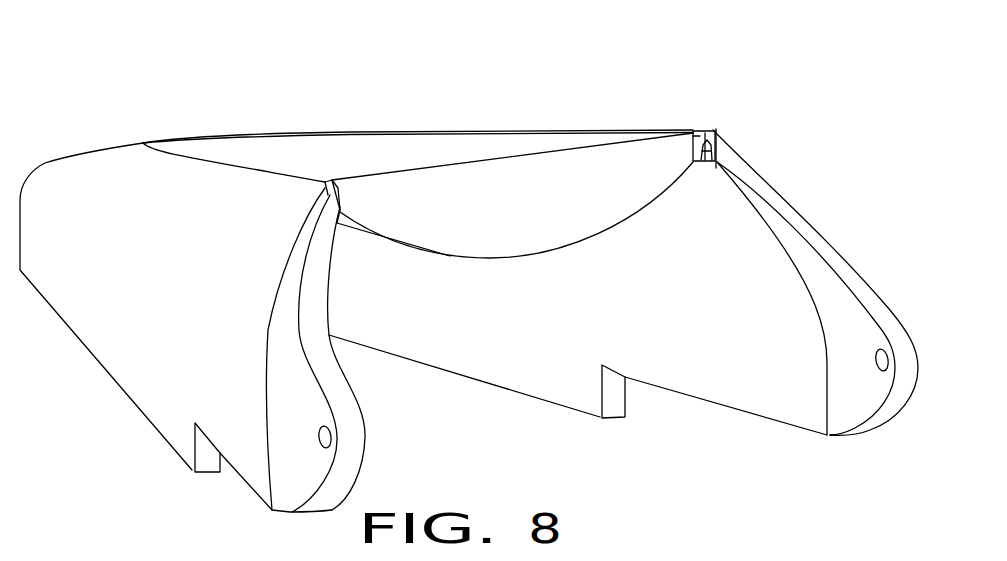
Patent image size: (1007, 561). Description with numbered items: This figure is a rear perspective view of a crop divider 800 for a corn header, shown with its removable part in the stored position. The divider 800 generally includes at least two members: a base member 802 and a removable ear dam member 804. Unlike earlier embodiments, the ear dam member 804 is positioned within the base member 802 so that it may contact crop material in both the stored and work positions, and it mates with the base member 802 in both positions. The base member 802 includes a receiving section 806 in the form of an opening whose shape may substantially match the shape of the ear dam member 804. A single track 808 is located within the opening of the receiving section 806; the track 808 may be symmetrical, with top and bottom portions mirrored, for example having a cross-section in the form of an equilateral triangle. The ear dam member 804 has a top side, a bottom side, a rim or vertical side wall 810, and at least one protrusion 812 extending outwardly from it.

The divider 800 is at (627, 78).
The base member 802 is at (148, 382).
The ear dam member 804 is at (383, 153).
The receiving section 806 is at (688, 124).
The track 808 is at (718, 145).
The vertical side wall 810 is at (324, 209).
The protrusion 812 is at (314, 193).